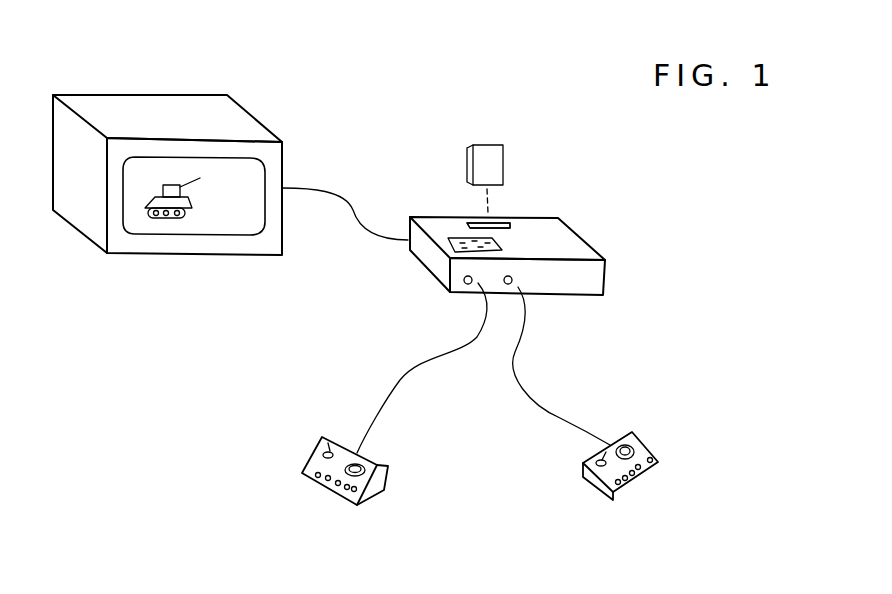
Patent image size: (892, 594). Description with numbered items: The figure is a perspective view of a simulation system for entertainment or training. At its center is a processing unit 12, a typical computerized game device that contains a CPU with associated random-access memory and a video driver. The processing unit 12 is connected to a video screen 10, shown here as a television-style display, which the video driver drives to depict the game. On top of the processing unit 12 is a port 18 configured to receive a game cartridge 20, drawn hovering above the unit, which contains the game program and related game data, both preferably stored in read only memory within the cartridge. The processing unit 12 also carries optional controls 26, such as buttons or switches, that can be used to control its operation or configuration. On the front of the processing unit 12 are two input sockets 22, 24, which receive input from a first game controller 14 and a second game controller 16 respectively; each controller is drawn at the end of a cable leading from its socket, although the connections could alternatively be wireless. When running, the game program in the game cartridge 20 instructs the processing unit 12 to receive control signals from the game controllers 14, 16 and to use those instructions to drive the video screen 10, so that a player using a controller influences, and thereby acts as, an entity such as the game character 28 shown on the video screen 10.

The video screen 10 is at (217, 187).
The processing unit 12 is at (568, 246).
The first game controller 14 is at (377, 487).
The second game controller 16 is at (613, 443).
The port 18 is at (562, 248).
The game cartridge 20 is at (485, 165).
The input socket 22 is at (467, 285).
The input socket 24 is at (513, 278).
The controls 26 is at (465, 238).
The game character 28 is at (157, 183).